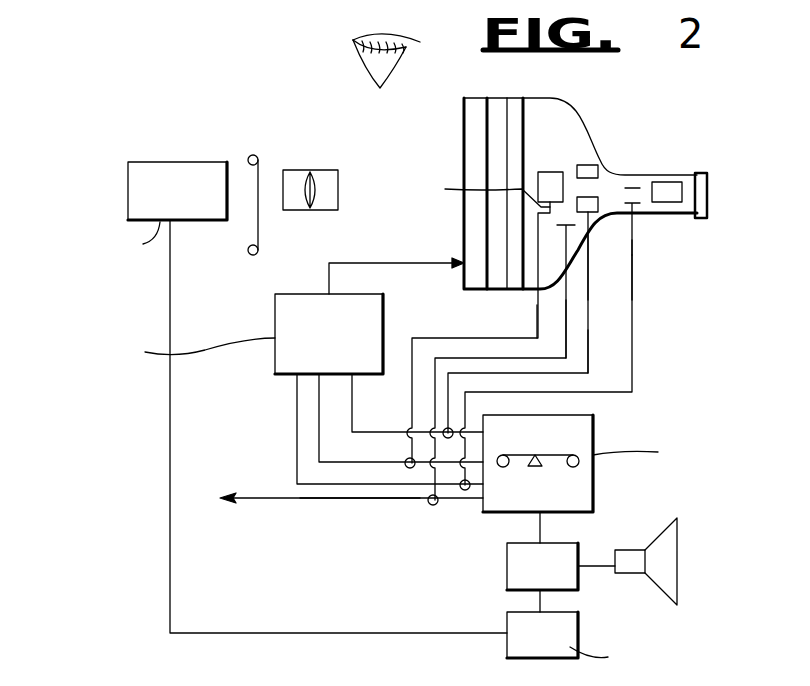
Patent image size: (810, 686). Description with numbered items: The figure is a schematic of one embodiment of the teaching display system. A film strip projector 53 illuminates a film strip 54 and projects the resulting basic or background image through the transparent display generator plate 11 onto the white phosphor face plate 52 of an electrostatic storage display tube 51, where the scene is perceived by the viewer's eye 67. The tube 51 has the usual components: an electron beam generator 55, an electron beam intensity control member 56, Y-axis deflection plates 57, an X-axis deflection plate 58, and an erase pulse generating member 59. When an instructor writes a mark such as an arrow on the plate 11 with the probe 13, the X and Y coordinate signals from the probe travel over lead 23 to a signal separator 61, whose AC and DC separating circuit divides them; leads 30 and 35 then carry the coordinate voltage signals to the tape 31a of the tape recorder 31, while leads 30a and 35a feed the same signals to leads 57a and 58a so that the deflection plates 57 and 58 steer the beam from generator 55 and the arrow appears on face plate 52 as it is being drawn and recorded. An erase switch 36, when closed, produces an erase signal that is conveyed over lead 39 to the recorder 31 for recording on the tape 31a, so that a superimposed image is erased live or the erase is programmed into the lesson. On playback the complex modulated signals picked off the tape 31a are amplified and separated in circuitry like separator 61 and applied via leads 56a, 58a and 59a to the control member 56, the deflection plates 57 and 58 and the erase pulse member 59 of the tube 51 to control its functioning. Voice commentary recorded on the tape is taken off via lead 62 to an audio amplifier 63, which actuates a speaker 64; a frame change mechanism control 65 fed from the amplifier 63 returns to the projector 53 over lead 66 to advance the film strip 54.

The viewer's eye 67 is at (393, 38).
The transparent display generator plate 11 is at (476, 110).
The white phosphor screen face plate 52 is at (514, 112).
The probe 13 is at (457, 268).
The electrostatic storage display tube 51 is at (652, 144).
The X-axis deflection plate 58 is at (552, 175).
The lead 58a is at (477, 192).
The Y-axis deflection plates 57 is at (590, 166).
The lead 57a is at (603, 224).
The electron beam intensity control member 56 is at (637, 186).
The lead 56a is at (633, 255).
The electron beam generator 55 is at (668, 196).
The erase pulse generating member 59 is at (556, 228).
The lead 59a is at (566, 333).
The lead 35a is at (537, 305).
The lead 30a is at (587, 356).
The lead 23 is at (407, 262).
The signal separator 61 is at (203, 334).
The lead 35 is at (319, 415).
The lead 30 is at (352, 425).
The erase switch 36 is at (250, 498).
The lead 39 is at (325, 499).
The tape recorder 31 is at (570, 497).
The tape 31a is at (555, 455).
The lead 62 is at (543, 524).
The audio amplifier 63 is at (505, 565).
The speaker 64 is at (665, 571).
The frame change mechanism control 65 is at (553, 640).
The lead 66 is at (325, 633).
The film strip projector 53 is at (190, 173).
The film strip 54 is at (262, 180).